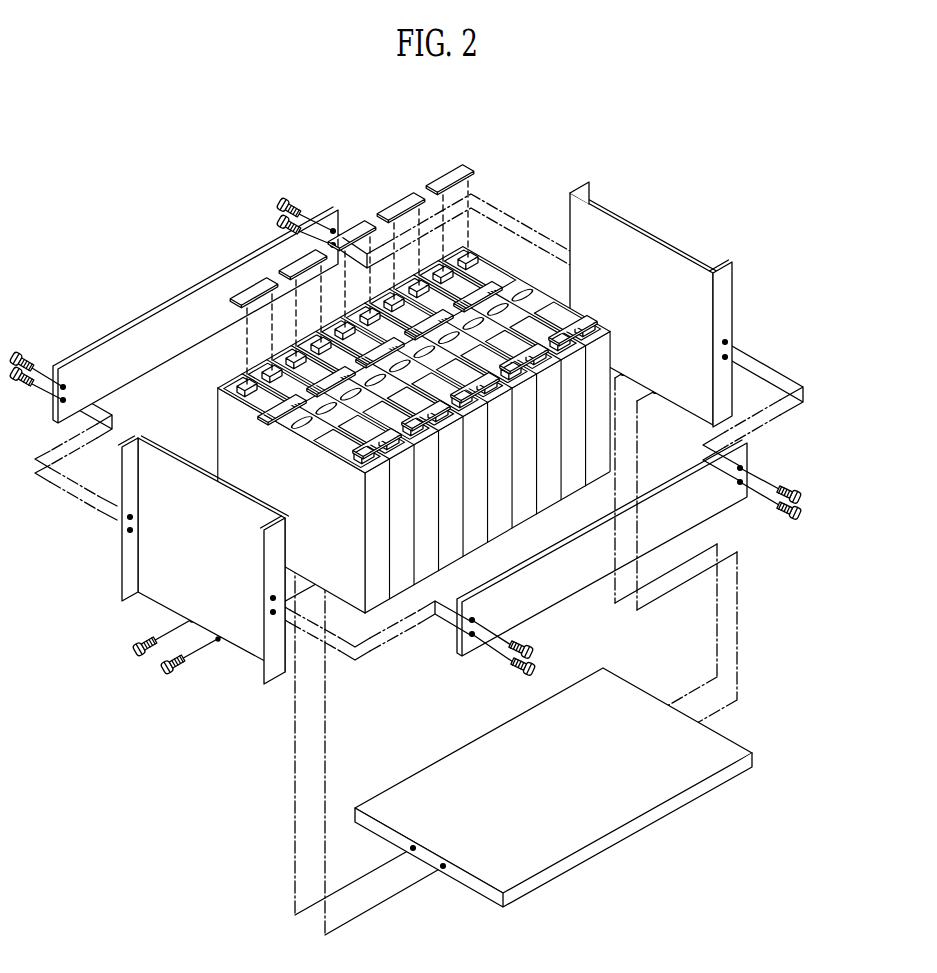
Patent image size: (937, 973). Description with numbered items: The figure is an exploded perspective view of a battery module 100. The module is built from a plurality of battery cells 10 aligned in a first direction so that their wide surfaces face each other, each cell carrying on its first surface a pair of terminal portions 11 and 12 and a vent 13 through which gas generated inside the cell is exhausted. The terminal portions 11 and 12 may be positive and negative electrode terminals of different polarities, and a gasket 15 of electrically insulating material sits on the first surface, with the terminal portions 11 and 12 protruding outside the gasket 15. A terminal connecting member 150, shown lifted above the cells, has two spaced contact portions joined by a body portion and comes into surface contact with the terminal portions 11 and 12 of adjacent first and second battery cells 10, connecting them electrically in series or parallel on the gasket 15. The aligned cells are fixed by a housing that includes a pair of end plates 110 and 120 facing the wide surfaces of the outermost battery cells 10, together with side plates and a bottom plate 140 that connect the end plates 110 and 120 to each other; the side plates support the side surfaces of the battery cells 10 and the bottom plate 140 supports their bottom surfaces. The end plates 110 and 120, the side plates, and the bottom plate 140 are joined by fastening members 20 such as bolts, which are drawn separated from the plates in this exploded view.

The battery module 100 is at (147, 192).
The battery cell 10 is at (434, 541).
The terminal portion 11 is at (470, 257).
The terminal portion 12 is at (440, 268).
The vent 13 is at (524, 297).
The gasket 15 is at (268, 409).
The fastening member 20 is at (163, 671).
The end plate 110 is at (113, 575).
The end plate 120 is at (747, 288).
The bottom plate 140 is at (609, 860).
The terminal connecting member 150 is at (452, 172).